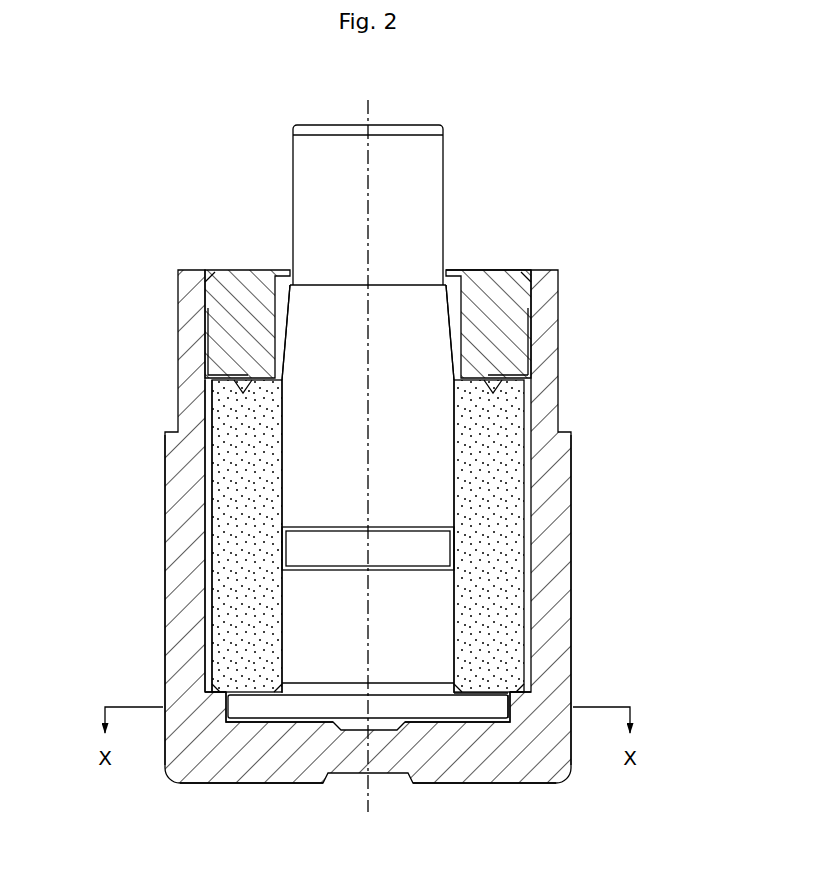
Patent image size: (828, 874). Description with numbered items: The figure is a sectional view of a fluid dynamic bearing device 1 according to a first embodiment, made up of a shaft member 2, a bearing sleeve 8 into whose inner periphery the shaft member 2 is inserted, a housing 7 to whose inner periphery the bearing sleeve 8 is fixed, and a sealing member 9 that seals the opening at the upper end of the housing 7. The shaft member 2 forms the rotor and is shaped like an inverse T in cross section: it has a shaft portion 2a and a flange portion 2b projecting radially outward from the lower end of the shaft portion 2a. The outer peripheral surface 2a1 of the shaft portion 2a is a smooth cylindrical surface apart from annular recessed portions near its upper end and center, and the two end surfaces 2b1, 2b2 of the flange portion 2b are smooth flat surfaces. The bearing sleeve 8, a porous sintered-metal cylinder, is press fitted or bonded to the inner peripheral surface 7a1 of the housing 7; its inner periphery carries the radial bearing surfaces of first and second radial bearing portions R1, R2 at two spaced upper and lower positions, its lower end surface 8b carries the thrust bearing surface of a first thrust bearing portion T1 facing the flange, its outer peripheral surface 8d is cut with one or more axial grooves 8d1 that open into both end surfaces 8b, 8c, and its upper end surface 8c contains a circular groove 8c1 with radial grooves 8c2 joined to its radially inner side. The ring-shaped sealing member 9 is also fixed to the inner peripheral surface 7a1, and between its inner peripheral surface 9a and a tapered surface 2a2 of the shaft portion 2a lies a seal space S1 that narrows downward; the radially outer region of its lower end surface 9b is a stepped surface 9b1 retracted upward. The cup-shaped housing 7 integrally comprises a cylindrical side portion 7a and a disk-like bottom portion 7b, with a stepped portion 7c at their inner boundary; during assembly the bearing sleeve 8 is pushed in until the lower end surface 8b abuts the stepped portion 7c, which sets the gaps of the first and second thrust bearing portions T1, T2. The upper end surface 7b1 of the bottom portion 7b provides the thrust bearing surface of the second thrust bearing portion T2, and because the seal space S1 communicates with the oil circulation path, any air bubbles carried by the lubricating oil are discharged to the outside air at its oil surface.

The fluid dynamic bearing device 1 is at (549, 206).
The shaft member 2 is at (449, 177).
The shaft portion 2a is at (400, 148).
The outer peripheral surface of the shaft portion 2a1 is at (456, 498).
The tapered surface of the shaft portion 2a2 is at (452, 292).
The flange portion 2b is at (432, 705).
The upper end surface of the flange portion 2b1 is at (483, 690).
The lower end surface of the flange portion 2b2 is at (484, 722).
The housing 7 is at (176, 292).
The side portion 7a is at (175, 500).
The inner peripheral surface of the housing 7a1 is at (546, 583).
The bottom portion 7b is at (308, 765).
The upper end surface of the bottom portion 7b1 is at (268, 716).
The stepped portion 7c is at (233, 692).
The bearing sleeve 8 is at (243, 423).
The lower end surface of the bearing sleeve 8b is at (240, 695).
The upper end surface of the bearing sleeve 8c is at (250, 372).
The circular groove 8c1 is at (490, 370).
The radial groove 8c2 is at (468, 377).
The outer peripheral surface of the bearing sleeve 8d is at (207, 570).
The axial groove 8d1 is at (215, 538).
The sealing member 9 is at (233, 285).
The inner peripheral surface of the sealing member 9a is at (470, 300).
The lower end surface of the sealing member 9b is at (250, 387).
The stepped surface 9b1 is at (508, 380).
The first radial bearing portion R1 is at (278, 465).
The second radial bearing portion R2 is at (278, 627).
The seal space S1 is at (281, 328).
The first thrust bearing portion T1 is at (230, 688).
The second thrust bearing portion T2 is at (468, 724).